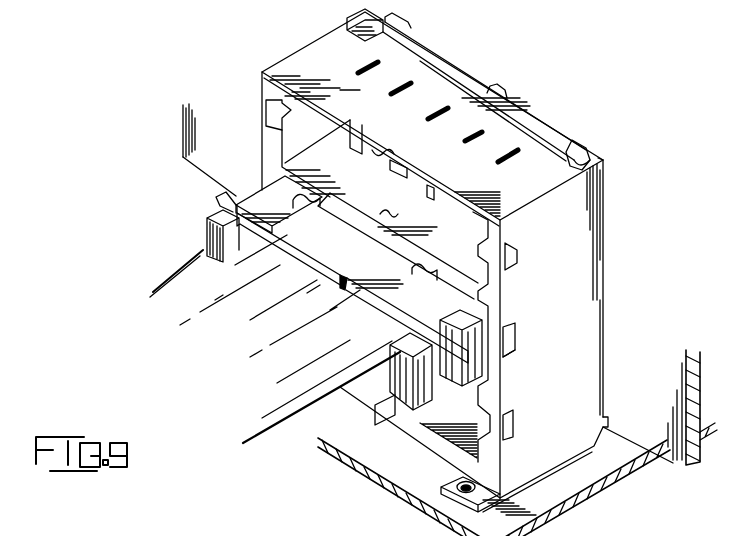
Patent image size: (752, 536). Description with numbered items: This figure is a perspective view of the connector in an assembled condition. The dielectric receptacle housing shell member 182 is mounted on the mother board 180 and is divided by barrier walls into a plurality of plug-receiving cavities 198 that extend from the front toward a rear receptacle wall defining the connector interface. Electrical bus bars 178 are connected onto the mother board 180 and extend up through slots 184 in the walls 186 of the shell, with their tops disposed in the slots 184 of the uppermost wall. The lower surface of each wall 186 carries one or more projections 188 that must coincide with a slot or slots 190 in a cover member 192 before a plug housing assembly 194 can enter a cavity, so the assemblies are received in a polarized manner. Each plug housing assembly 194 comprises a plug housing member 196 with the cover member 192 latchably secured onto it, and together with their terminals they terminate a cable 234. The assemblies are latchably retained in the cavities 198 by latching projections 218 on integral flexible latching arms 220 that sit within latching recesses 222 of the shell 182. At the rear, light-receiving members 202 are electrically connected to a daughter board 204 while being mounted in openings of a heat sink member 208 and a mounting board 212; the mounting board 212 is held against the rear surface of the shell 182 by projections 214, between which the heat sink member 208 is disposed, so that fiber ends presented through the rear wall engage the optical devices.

The electrical bus bars 178 is at (398, 229).
The mother board 180 is at (588, 496).
The dielectric receptacle housing shell member 182 is at (606, 281).
The slots 184 is at (408, 92).
The walls 186 is at (348, 123).
The projections 188 is at (378, 158).
The slots 190 is at (438, 276).
The cover member 192 is at (268, 200).
The plug housing assembly 194 is at (204, 251).
The plug housing member 196 is at (220, 228).
The plug-receiving cavities 198 is at (447, 217).
The light-receiving members 202 is at (283, 115).
The daughter board 204 is at (650, 433).
The heat sink member 208 is at (533, 113).
The mounting board 212 is at (453, 83).
The projections 214 is at (597, 158).
The latching projections 218 is at (516, 354).
The integral flexible latching arms 220 is at (233, 200).
The latching recesses 222 is at (520, 257).
The cable 234 is at (238, 365).